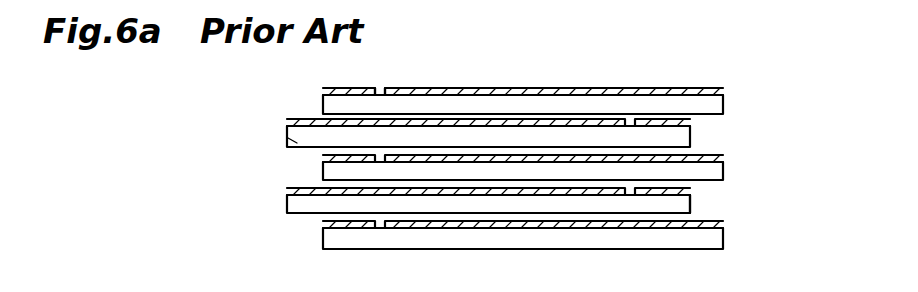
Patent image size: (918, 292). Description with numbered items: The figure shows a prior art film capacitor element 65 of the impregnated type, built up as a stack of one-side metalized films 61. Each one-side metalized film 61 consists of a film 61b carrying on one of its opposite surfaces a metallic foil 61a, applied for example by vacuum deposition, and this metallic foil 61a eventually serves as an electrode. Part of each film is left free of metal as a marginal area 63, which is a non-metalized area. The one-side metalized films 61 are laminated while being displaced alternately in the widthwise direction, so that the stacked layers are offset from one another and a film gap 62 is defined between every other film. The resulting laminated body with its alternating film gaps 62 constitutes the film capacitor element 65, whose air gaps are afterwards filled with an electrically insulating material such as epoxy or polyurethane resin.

The one-side metalized film 61 is at (200, 100).
The metallic foil 61a is at (288, 123).
The film 61b is at (337, 178).
The film gap 62 is at (705, 212).
The marginal area 63 is at (380, 93).
The film capacitor element 65 is at (790, 82).